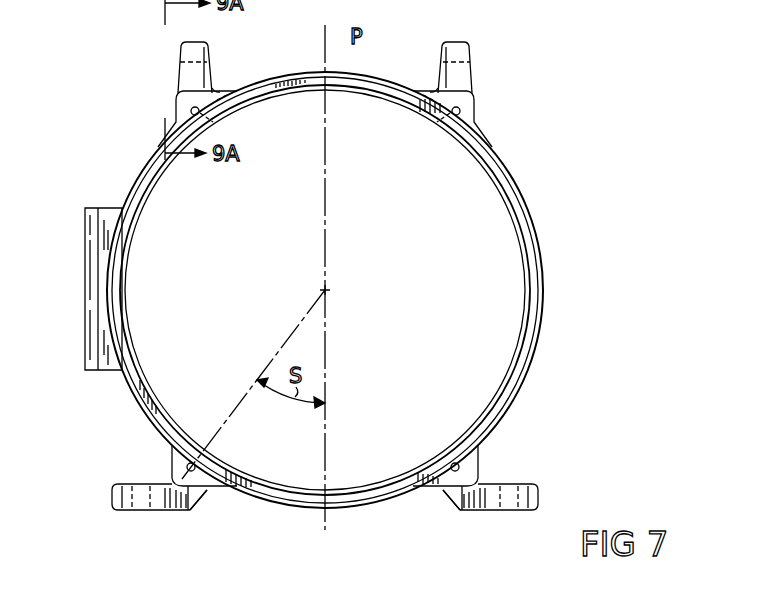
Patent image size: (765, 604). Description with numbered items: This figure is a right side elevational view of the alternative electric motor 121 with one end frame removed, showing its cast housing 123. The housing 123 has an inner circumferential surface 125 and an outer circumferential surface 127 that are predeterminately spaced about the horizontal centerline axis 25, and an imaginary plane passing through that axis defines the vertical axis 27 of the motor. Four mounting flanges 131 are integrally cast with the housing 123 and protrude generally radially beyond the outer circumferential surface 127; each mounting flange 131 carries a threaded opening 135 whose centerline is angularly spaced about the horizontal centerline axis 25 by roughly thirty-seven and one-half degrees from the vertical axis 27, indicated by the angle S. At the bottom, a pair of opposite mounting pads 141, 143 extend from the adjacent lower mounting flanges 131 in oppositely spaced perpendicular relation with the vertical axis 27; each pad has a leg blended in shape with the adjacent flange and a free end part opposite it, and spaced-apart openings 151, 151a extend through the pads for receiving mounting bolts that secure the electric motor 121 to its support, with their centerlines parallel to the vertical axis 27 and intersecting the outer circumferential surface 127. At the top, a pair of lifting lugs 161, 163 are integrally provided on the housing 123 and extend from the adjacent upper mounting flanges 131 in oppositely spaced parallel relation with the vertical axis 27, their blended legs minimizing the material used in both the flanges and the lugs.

The electric motor 121 is at (393, 290).
The housing 123 is at (507, 178).
The inner circumferential surface 125 is at (518, 243).
The outer circumferential surface 127 is at (537, 232).
The mounting flange 131 is at (175, 108).
The threaded opening 135 is at (200, 115).
The mounting pad 141 is at (155, 502).
The mounting pad 143 is at (500, 502).
The opening 151 is at (138, 505).
The opening 151a is at (508, 505).
The lifting lug 161 is at (174, 50).
The lifting lug 163 is at (531, 42).
The horizontal centerline axis 25 is at (327, 288).
The vertical axis 27 is at (323, 40).